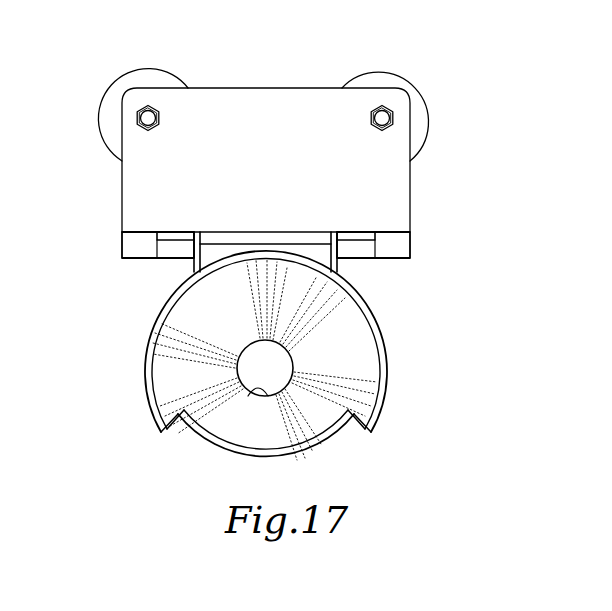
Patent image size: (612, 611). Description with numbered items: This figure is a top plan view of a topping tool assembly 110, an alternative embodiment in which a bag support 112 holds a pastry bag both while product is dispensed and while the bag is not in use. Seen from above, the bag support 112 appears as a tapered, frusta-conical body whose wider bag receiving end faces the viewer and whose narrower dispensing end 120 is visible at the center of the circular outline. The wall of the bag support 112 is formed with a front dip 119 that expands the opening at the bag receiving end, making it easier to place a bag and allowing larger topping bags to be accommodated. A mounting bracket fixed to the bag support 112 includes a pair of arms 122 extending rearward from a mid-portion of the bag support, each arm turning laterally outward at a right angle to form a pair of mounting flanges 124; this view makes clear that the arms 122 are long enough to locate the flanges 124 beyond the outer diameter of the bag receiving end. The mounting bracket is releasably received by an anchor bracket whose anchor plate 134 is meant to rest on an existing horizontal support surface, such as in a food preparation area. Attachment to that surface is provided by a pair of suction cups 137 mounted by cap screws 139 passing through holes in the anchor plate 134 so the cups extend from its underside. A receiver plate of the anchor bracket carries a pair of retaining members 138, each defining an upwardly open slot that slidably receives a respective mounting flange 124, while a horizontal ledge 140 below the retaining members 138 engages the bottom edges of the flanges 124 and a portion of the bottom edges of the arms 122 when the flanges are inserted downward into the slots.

The topping tool assembly 110 is at (387, 43).
The bag support 112 is at (388, 347).
The front dip 119 is at (283, 451).
The dispensing end 120 is at (250, 395).
The arms 122 is at (197, 250).
The mounting flanges 124 is at (175, 232).
The anchor plate 134 is at (285, 206).
The suction cups 137 is at (106, 104).
The retaining members 138 is at (190, 243).
The cap screws 139 is at (165, 112).
The horizontal ledge 140 is at (400, 250).